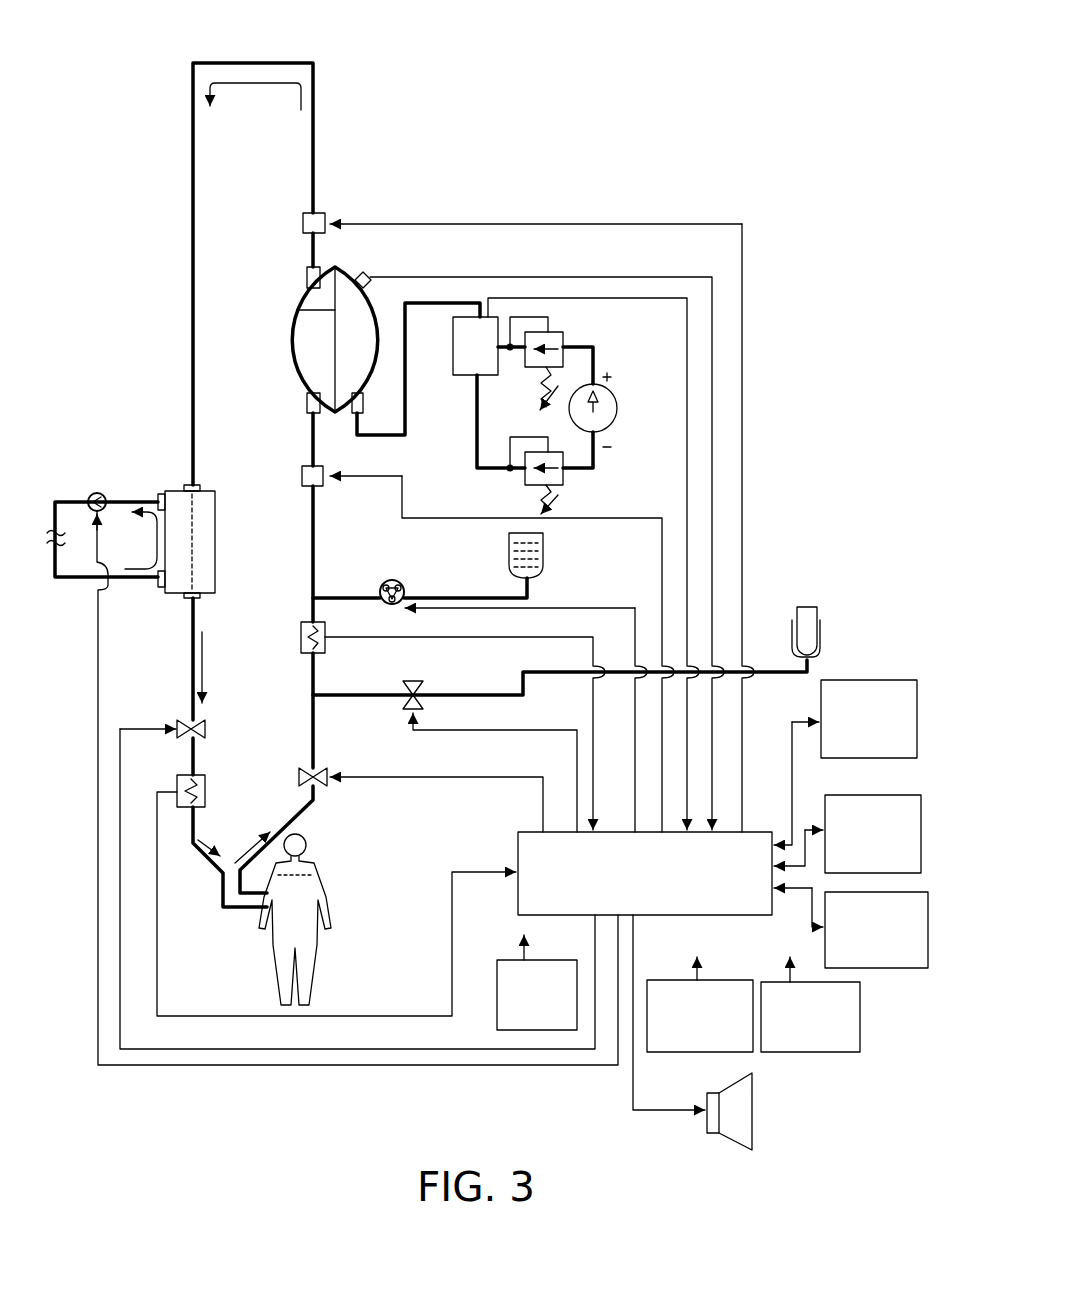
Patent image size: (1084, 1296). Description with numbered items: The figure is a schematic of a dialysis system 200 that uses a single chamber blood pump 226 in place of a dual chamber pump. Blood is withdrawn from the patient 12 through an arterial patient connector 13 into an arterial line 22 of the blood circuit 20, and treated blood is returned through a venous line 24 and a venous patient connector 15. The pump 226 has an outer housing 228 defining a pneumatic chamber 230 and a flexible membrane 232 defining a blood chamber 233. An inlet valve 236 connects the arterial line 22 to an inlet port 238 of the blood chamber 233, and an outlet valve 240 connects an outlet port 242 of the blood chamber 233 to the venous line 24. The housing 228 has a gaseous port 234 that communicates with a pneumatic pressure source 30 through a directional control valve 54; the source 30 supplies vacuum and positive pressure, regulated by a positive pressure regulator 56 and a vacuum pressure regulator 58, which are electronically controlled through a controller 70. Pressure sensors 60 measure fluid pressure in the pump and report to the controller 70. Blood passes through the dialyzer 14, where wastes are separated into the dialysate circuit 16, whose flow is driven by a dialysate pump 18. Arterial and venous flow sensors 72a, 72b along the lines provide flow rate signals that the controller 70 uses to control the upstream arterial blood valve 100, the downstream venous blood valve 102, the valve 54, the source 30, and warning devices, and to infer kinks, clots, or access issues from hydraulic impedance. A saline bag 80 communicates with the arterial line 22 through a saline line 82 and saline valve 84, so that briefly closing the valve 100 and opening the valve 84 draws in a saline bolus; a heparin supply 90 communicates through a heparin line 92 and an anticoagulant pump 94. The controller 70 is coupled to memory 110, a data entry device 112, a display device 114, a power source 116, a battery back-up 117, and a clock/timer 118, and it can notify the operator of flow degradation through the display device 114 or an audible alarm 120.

The dialysis system 200 is at (147, 333).
The blood circuit 20 is at (237, 60).
The outlet valve 240 is at (300, 216).
The outlet port 242 is at (305, 272).
The single chamber blood pump 226 is at (260, 336).
The flexible membrane 232 is at (297, 310).
The blood chamber 233 is at (333, 353).
The pneumatic chamber 230 is at (377, 348).
The outer housing 228 is at (293, 358).
The inlet port 238 is at (305, 404).
The pressure sensors 60 is at (367, 273).
The gaseous port 234 is at (363, 412).
The directional control valve 54 is at (455, 375).
The positive pressure regulator 56 is at (570, 333).
The pneumatic pressure source 30 is at (618, 402).
The vacuum pressure regulator 58 is at (525, 480).
The inlet valve 236 is at (300, 478).
The dialyzer 14 is at (177, 495).
The dialysate circuit 16 is at (122, 500).
The dialysate pump 18 is at (93, 493).
The venous line 24 is at (190, 620).
The downstream venous blood valve 102 is at (175, 718).
The arterial flow sensor 72a is at (300, 640).
The anticoagulant pump 94 is at (380, 608).
The heparin line 92 is at (530, 592).
The heparin supply 90 is at (510, 555).
The saline line 82 is at (527, 682).
The saline valve 84 is at (418, 683).
The saline bag 80 is at (818, 618).
The upstream arterial blood valve 100 is at (298, 777).
The venous flow sensor 72b is at (205, 792).
The arterial line 22 is at (307, 818).
The arterial patient connector 13 is at (262, 893).
The venous patient connector 15 is at (262, 907).
The patient 12 is at (308, 965).
The controller 70 is at (662, 896).
The display device 114 is at (838, 678).
The data entry device 112 is at (865, 793).
The memory 110 is at (878, 970).
The battery back-up 117 is at (722, 978).
The power source 116 is at (805, 1054).
The clock/timer 118 is at (548, 960).
The audible alarm 120 is at (753, 1103).